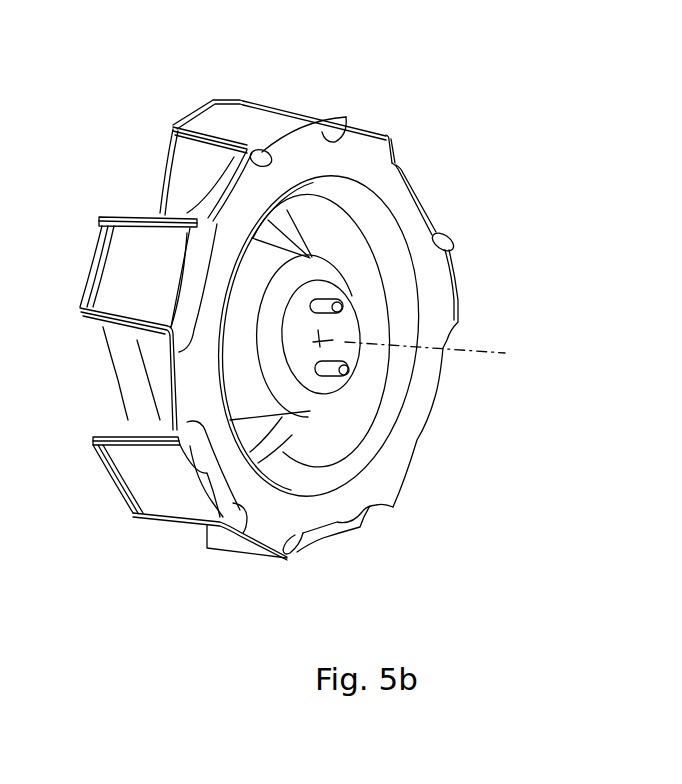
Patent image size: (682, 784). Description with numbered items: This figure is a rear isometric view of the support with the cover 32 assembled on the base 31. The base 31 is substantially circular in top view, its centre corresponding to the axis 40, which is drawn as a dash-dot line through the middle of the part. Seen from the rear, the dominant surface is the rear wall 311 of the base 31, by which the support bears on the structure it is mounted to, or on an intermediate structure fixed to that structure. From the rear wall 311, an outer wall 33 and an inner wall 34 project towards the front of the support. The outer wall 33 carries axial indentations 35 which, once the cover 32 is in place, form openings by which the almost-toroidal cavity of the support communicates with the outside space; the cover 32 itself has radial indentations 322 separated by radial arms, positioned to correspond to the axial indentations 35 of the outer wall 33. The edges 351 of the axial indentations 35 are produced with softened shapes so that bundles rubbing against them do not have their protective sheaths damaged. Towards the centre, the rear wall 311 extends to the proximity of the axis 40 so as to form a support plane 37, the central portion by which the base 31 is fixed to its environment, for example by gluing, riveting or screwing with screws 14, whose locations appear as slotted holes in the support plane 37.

The screws 14 is at (345, 370).
The base 31 is at (393, 510).
The rear wall 311 is at (395, 447).
The cover 32 is at (118, 356).
The radial indentations 322 is at (150, 188).
The outer wall 33 is at (165, 478).
The inner wall 34 is at (158, 373).
The axial indentations 35 is at (190, 163).
The edges of the axial indentations 351 is at (218, 140).
The support plane 37 is at (305, 353).
The axis 40 is at (465, 350).